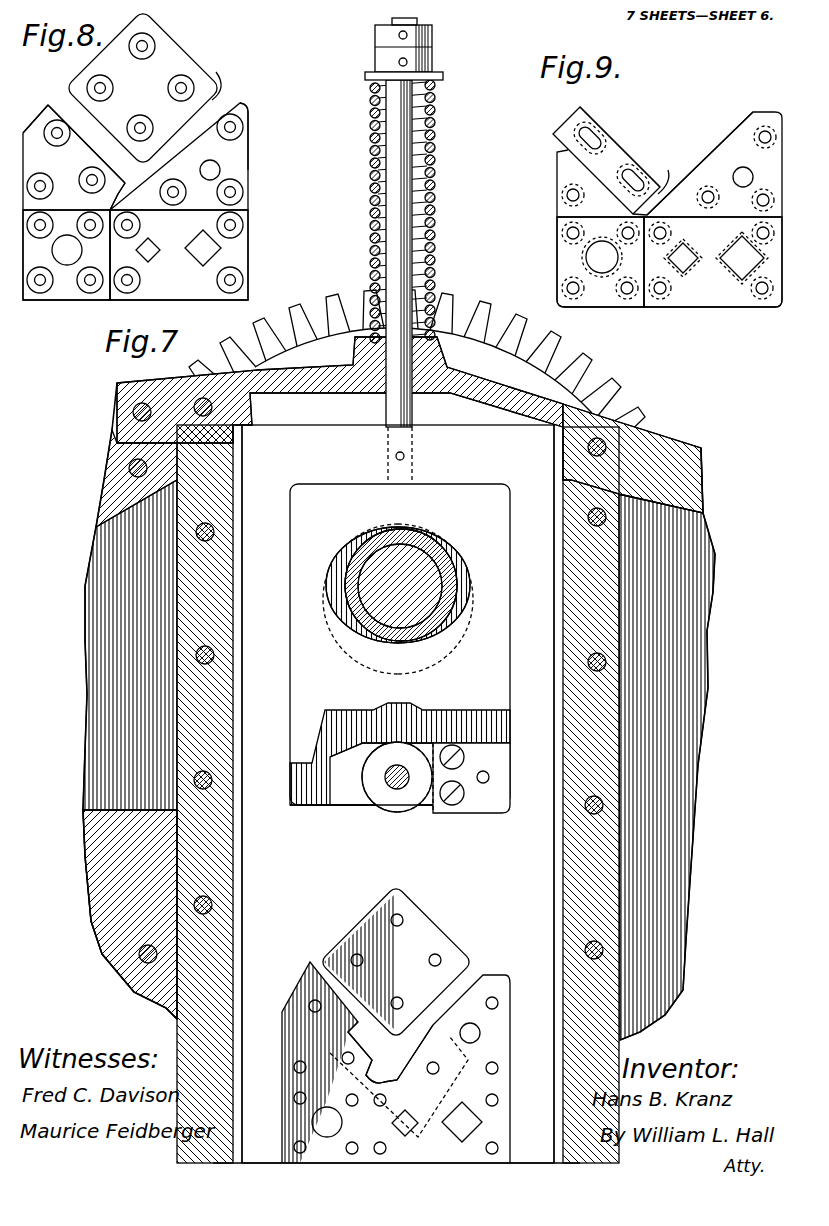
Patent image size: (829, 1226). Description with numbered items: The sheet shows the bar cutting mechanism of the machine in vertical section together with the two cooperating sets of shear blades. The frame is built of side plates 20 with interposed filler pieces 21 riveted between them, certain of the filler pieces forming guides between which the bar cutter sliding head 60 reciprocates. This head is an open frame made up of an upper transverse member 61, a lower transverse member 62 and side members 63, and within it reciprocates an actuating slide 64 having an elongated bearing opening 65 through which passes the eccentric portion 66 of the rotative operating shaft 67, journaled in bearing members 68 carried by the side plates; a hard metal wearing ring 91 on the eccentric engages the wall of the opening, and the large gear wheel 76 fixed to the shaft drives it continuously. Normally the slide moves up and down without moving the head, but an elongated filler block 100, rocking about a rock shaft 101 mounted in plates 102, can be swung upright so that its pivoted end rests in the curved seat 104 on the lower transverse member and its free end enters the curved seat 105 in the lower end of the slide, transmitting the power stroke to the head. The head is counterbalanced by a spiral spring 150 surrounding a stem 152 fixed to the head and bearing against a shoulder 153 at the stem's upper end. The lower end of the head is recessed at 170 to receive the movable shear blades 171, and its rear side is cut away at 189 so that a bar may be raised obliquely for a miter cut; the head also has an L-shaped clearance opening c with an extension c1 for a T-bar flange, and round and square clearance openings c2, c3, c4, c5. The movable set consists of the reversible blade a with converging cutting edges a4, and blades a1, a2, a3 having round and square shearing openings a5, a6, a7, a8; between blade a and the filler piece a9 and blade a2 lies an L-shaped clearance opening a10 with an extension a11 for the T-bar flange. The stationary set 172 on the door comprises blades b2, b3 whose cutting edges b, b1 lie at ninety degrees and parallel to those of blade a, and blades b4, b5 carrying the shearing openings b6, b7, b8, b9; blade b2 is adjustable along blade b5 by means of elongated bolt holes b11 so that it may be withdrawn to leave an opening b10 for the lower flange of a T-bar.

In FIG. 8, the movable shear blades 171 is at (259, 87).
In FIG. 8, the blade a is at (176, 56).
In FIG. 8, the blade a1 is at (246, 146).
In FIG. 8, the blade a2 is at (246, 256).
In FIG. 8, the blade a3 is at (58, 304).
In FIG. 8, the converging cutting edges a4 is at (122, 190).
In FIG. 8, the round opening a5 is at (220, 171).
In FIG. 8, the square opening a6 is at (200, 262).
In FIG. 8, the square opening a7 is at (150, 262).
In FIG. 8, the round opening a8 is at (67, 250).
In FIG. 8, the filler piece a9 is at (49, 114).
In FIG. 8, the L-shaped clearance opening a10 is at (212, 72).
In FIG. 8, the extension a11 is at (118, 177).
In FIG. 9, the stationary shear blades 172 is at (548, 186).
In FIG. 9, the cutting edge b is at (733, 138).
In FIG. 9, the cutting edge b1 is at (620, 140).
In FIG. 9, the blade b2 is at (570, 138).
In FIG. 9, the blade b3 is at (736, 168).
In FIG. 9, the blade b4 is at (742, 304).
In FIG. 9, the blade b5 is at (605, 304).
In FIG. 9, the round opening b6 is at (733, 177).
In FIG. 9, the square opening b7 is at (734, 266).
In FIG. 9, the square opening b8 is at (682, 273).
In FIG. 9, the round opening b9 is at (592, 257).
In FIG. 9, the opening b10 is at (677, 171).
In FIG. 9, the bolt holes b11 is at (590, 136).
In FIG. 7, the gear wheel 76 is at (331, 298).
In FIG. 7, the filler pieces 21 is at (117, 420).
In FIG. 7, the side plates 20 is at (399, 773).
In FIG. 7, the spring 150 is at (372, 96).
In FIG. 7, the stem 152 is at (398, 152).
In FIG. 7, the shoulder 153 is at (378, 44).
In FIG. 7, the sliding head 60 is at (398, 794).
In FIG. 7, the upper transverse member 61 is at (374, 455).
In FIG. 7, the side members 63 is at (398, 794).
In FIG. 7, the actuating slide 64 is at (400, 644).
In FIG. 7, the bearing opening 65 is at (460, 578).
In FIG. 7, the eccentric portion 66 is at (378, 558).
In FIG. 7, the operating shaft 67 is at (440, 652).
In FIG. 7, the bearing members 68 is at (345, 654).
In FIG. 7, the wearing ring 91 is at (398, 632).
In FIG. 7, the curved seat 105 is at (426, 696).
In FIG. 7, the filler block 100 is at (345, 800).
In FIG. 7, the rock shaft 101 is at (398, 790).
In FIG. 7, the plates 102 is at (482, 808).
In FIG. 7, the curved seat 104 is at (385, 808).
In FIG. 7, the lower transverse member 62 is at (368, 838).
In FIG. 7, the recess 170 is at (297, 997).
In FIG. 7, the inclined cut-away portion 189 is at (414, 1087).
In FIG. 7, the L-shaped clearance opening c is at (470, 977).
In FIG. 7, the extension c1 is at (390, 1052).
In FIG. 7, the clearance opening c2 is at (480, 1032).
In FIG. 7, the clearance opening c3 is at (462, 1122).
In FIG. 7, the clearance opening c4 is at (407, 1128).
In FIG. 7, the clearance opening c5 is at (342, 1124).